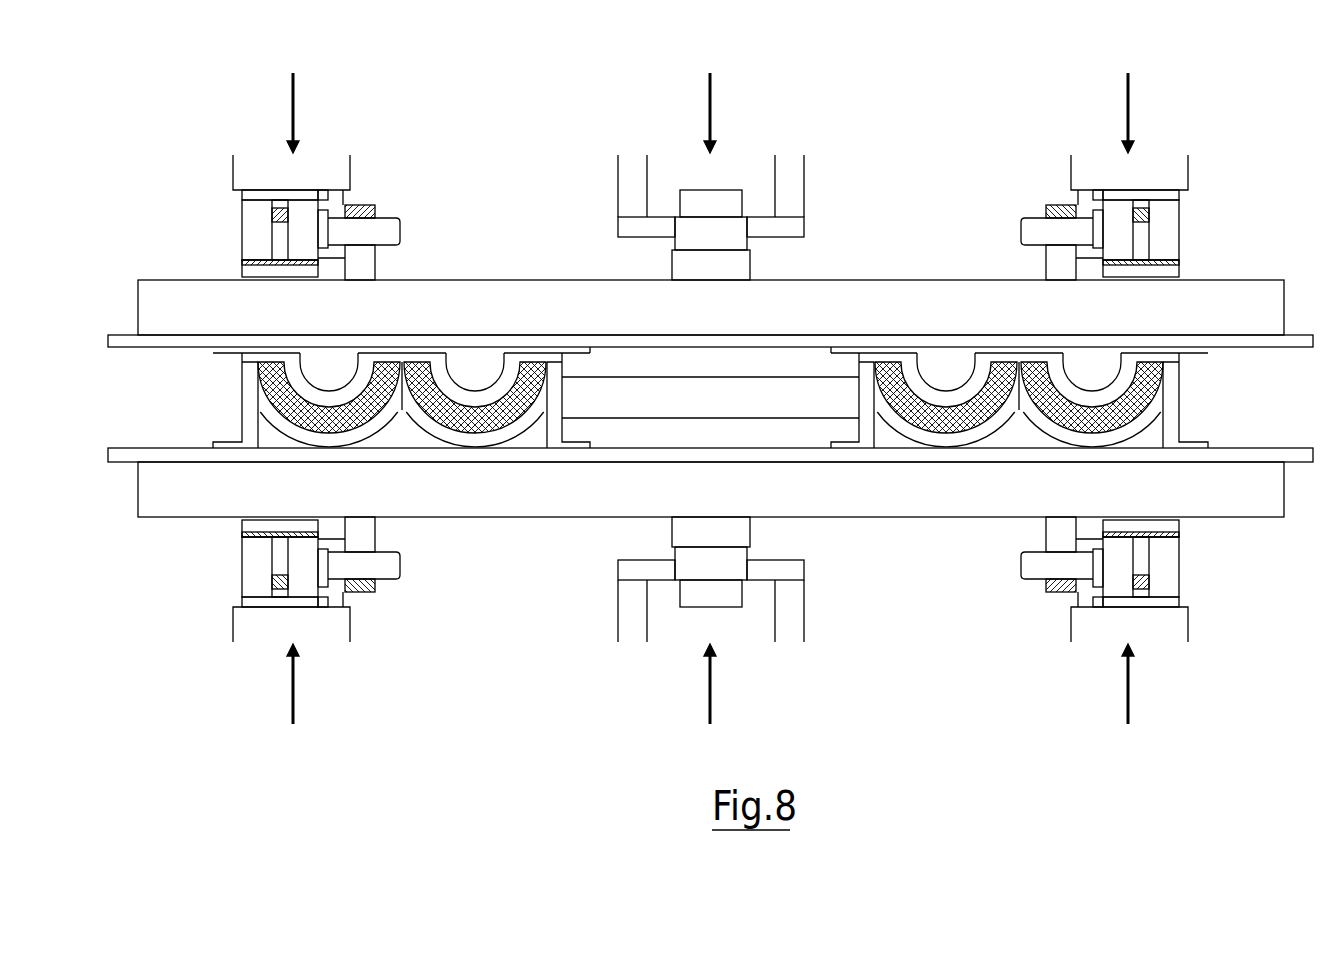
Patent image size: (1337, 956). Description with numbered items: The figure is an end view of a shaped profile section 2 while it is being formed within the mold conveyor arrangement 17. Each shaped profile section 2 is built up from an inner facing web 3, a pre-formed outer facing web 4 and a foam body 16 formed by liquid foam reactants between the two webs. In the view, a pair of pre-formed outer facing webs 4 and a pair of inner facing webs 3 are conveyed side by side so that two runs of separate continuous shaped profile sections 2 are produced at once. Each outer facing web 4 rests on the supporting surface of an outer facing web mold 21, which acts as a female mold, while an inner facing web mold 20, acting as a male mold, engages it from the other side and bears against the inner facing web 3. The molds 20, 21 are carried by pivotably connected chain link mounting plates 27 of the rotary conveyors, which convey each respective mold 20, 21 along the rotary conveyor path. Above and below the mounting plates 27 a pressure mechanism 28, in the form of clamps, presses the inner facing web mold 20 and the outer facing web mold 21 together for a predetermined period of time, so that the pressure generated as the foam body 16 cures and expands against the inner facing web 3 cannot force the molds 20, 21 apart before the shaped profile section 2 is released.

The shaped profile section 2 is at (266, 414).
The inner facing web 3 is at (417, 362).
The outer facing web 4 is at (427, 415).
The foam body 16 is at (268, 391).
The mold conveyor arrangement 17 is at (1223, 108).
The inner facing web mold 20 is at (522, 347).
The outer facing web mold 21 is at (283, 428).
The mounting plate 27 is at (1234, 302).
The pressure mechanism 28 is at (710, 400).